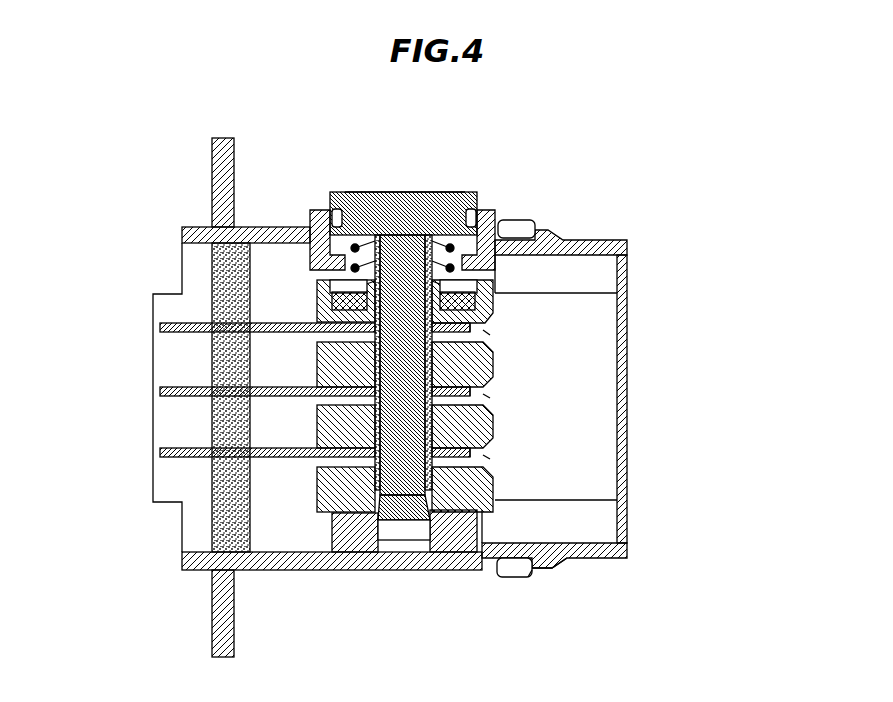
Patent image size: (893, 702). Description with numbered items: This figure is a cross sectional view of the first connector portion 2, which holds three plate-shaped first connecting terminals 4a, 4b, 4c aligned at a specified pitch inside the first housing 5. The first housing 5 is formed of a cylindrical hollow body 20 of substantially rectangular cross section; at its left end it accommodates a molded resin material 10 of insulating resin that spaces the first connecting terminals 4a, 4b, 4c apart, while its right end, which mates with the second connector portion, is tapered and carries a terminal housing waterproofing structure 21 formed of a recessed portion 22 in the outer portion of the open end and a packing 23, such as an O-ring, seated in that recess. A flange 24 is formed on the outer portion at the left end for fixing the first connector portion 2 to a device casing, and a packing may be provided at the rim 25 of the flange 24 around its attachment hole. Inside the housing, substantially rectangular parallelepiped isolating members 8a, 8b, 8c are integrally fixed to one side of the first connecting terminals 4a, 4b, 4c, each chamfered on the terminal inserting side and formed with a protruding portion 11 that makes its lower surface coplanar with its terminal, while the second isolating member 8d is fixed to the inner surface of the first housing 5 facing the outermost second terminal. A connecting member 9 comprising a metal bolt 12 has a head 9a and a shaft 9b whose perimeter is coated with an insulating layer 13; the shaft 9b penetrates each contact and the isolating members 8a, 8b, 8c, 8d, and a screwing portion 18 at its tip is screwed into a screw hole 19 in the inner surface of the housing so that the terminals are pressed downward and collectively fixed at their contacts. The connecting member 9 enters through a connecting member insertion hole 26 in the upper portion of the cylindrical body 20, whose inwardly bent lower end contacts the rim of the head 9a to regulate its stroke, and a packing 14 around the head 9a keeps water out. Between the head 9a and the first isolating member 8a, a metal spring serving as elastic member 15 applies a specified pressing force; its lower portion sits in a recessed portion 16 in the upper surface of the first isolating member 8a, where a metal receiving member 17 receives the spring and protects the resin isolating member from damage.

The first connector portion 2 is at (143, 118).
The first connecting terminal 4a is at (160, 327).
The first connecting terminal 4b is at (160, 391).
The first connecting terminal 4c is at (160, 452).
The first housing 5 is at (247, 228).
The first isolating member 8a is at (497, 321).
The first isolating member 8b is at (496, 369).
The first isolating member 8c is at (496, 430).
The second isolating member 8d is at (496, 487).
The connecting member 9 is at (364, 188).
The head 9a is at (400, 192).
The shaft 9b is at (318, 365).
The molded resin material 10 is at (215, 522).
The protruding portion 11 is at (490, 333).
The bolt 12 is at (420, 192).
The insulating layer 13 is at (360, 462).
The packing 14 is at (332, 213).
The elastic member 15 is at (470, 273).
The recessed portion 16 is at (345, 270).
The receiving member 17 is at (497, 293).
The screwing portion 18 is at (455, 515).
The screw hole 19 is at (395, 540).
The cylindrical body 20 is at (590, 240).
The terminal housing waterproofing structure 21 is at (517, 584).
The recessed portion 22 is at (535, 572).
The packing 23 is at (532, 578).
The flange 24 is at (232, 140).
The rim 25 is at (212, 163).
The connecting member insertion hole 26 is at (472, 208).